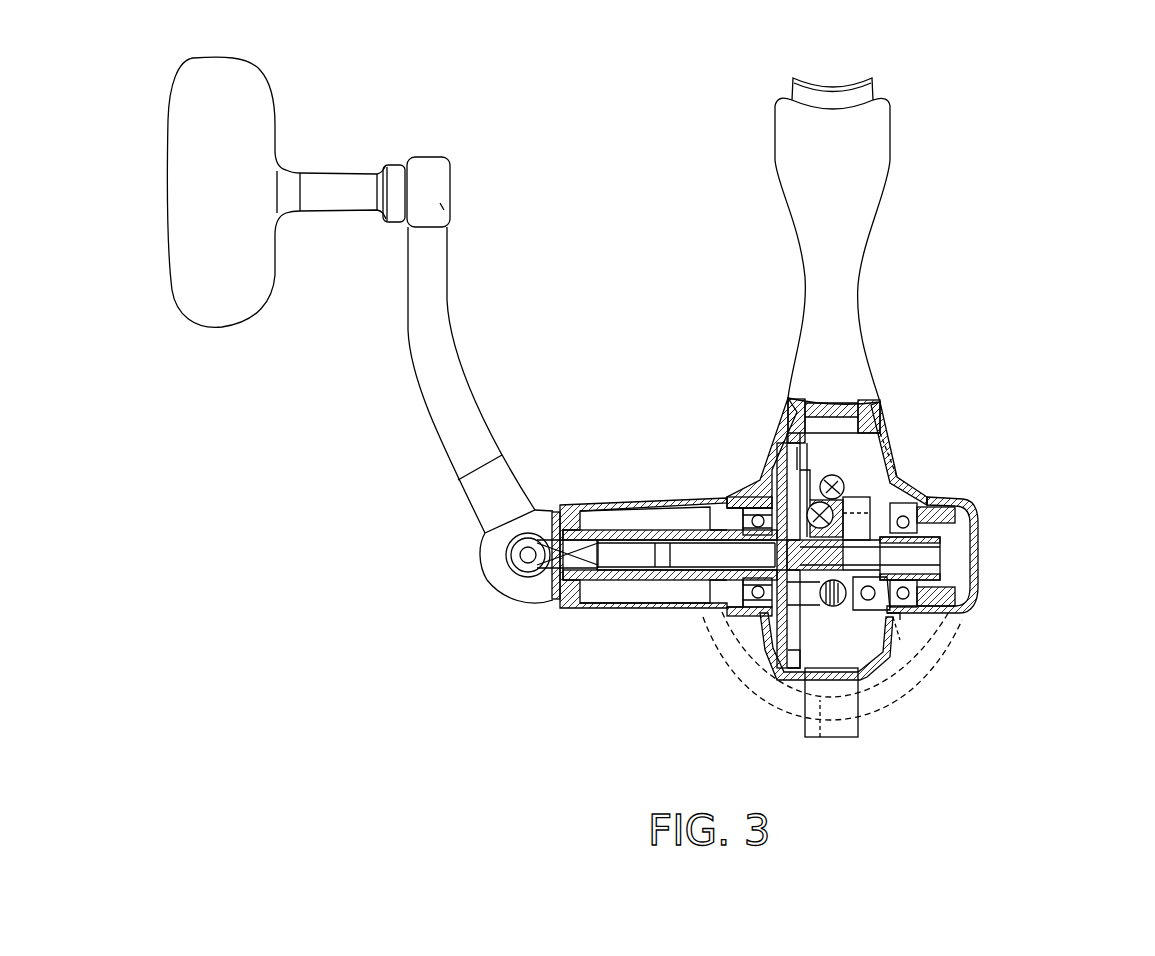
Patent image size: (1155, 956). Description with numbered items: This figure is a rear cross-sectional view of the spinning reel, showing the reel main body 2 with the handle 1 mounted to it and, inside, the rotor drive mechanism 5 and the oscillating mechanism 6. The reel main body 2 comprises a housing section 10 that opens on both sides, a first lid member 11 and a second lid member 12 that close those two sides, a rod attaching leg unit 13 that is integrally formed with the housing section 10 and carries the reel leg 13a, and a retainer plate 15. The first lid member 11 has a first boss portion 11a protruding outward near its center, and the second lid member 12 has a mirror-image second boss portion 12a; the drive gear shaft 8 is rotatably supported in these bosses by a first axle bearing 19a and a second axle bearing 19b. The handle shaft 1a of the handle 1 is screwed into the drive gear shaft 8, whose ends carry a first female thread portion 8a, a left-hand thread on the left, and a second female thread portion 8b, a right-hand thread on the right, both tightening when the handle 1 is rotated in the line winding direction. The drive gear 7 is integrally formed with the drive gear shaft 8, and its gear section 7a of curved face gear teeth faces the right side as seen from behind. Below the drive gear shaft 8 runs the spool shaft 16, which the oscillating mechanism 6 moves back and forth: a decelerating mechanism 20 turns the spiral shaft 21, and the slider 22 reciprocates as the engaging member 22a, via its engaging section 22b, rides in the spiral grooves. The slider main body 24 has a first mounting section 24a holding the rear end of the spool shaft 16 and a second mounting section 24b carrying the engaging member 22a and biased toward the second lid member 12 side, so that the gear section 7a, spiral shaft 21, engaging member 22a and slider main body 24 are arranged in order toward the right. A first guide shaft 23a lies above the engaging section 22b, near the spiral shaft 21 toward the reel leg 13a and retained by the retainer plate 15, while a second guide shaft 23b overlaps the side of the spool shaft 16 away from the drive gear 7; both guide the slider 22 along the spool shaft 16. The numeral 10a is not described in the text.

The handle 1 is at (462, 290).
The handle shaft 1a is at (603, 610).
The reel main body 2 is at (888, 352).
The rotor drive mechanism 5 is at (760, 500).
The oscillating mechanism 6 is at (900, 635).
The drive gear 7 is at (775, 660).
The gear section 7a is at (785, 675).
The drive gear shaft 8 is at (718, 615).
The first female thread portion 8a is at (687, 530).
The second female thread portion 8b is at (937, 537).
The housing section 10 is at (810, 690).
The lid member boss 10a is at (862, 630).
The first lid member 11 is at (773, 417).
The first boss portion 11a is at (628, 560).
The second lid member 12 is at (890, 408).
The second boss portion 12a is at (955, 612).
The rod attaching leg unit 13 is at (867, 297).
The reel leg 13a is at (833, 82).
The retainer plate 15 is at (858, 472).
The spool shaft 16 is at (768, 625).
The first axle bearing 19a is at (723, 497).
The second axle bearing 19b is at (905, 505).
The decelerating mechanism 20 is at (807, 447).
The spiral shaft 21 is at (745, 500).
The slider 22 is at (840, 628).
The engaging member 22a is at (827, 478).
The engaging section 22b is at (772, 490).
The first guide shaft 23a is at (895, 415).
The second guide shaft 23b is at (920, 615).
The slider main body 24 is at (935, 557).
The first mounting section 24a is at (895, 490).
The second mounting section 24b is at (740, 635).